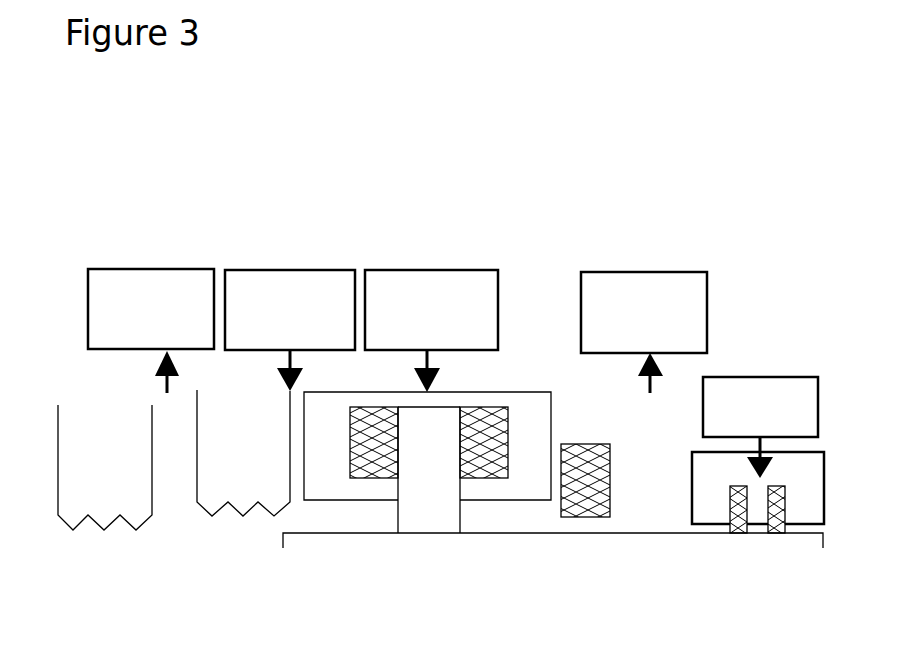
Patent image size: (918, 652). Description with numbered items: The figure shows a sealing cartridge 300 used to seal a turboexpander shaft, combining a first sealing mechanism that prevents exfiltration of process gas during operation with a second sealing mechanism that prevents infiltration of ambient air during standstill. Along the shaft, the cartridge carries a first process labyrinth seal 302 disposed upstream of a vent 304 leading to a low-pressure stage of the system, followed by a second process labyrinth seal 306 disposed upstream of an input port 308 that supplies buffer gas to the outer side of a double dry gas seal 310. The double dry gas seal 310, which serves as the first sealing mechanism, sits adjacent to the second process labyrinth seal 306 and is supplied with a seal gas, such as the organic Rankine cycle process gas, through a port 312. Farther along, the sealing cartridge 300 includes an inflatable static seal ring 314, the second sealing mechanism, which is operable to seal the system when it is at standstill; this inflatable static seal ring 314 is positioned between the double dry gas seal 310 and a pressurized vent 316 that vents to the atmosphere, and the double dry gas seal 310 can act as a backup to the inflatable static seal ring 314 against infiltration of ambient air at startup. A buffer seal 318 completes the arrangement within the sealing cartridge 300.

The sealing cartridge 300 is at (287, 135).
The first process labyrinth seal 302 is at (58, 440).
The vent 304 is at (152, 269).
The second process labyrinth seal 306 is at (197, 410).
The input port 308 is at (278, 270).
The double dry gas seal 310 is at (492, 392).
The port 312 is at (414, 270).
The inflatable static seal ring 314 is at (612, 450).
The pressurized vent 316 is at (630, 272).
The buffer seal 318 is at (692, 482).